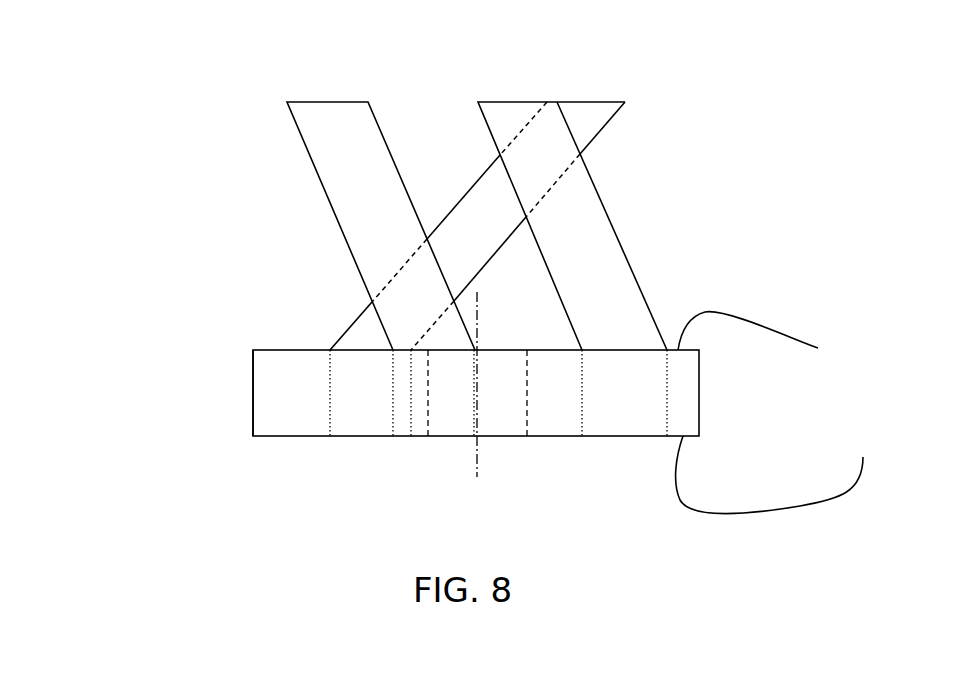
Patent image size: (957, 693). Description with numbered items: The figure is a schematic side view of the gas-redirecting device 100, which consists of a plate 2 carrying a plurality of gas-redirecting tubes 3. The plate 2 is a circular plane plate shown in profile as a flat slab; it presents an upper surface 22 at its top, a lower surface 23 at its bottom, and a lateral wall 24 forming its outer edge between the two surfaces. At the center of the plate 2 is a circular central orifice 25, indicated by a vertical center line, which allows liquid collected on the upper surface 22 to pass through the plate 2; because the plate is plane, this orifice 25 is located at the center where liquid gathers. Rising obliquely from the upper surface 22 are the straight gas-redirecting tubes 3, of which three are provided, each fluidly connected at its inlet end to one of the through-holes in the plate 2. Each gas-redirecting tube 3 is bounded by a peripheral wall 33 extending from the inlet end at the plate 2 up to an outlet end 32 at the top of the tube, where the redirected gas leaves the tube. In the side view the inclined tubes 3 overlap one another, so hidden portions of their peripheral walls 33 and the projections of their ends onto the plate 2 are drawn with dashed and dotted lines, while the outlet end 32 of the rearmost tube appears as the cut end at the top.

The gas-redirecting device 100 is at (98, 127).
The plate 2 is at (275, 385).
The gas-redirecting tube 3 is at (353, 212).
The upper surface 22 is at (766, 335).
The lower surface 23 is at (771, 469).
The lateral wall 24 is at (253, 377).
The orifice 25 is at (467, 443).
The outlet end 32 is at (600, 97).
The peripheral wall 33 is at (620, 240).